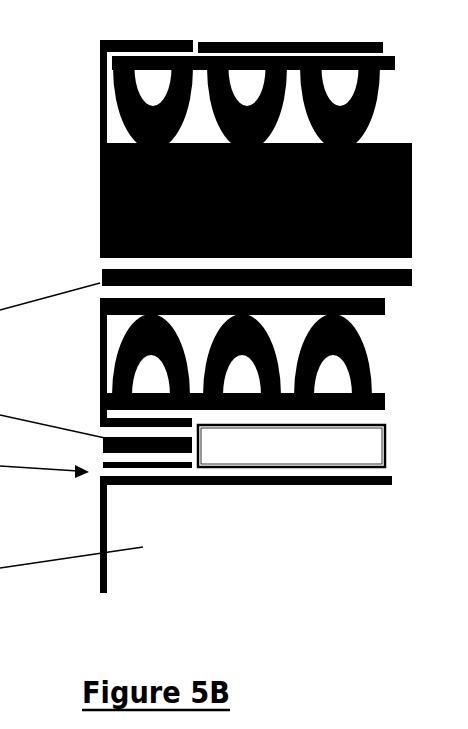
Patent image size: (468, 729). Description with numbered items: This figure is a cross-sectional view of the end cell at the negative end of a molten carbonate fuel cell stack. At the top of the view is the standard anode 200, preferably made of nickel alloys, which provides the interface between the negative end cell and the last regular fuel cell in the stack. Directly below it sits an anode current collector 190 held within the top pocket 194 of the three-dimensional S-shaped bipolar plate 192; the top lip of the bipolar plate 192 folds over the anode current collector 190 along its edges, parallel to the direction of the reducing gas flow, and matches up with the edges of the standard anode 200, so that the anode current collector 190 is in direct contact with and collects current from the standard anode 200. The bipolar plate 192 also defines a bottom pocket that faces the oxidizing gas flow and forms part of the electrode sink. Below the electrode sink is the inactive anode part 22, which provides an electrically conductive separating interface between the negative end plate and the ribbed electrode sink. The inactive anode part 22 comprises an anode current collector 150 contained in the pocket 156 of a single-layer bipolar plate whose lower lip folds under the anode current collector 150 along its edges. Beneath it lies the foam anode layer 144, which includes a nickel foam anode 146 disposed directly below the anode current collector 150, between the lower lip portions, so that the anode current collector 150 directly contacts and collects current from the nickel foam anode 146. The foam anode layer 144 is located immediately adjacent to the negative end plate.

The inactive anode part 22 is at (93, 317).
The foam anode layer 144 is at (390, 422).
The nickel foam anode 146 is at (228, 450).
The anode current collector 150 is at (114, 300).
The pocket 156 is at (100, 317).
The anode current collector 190 is at (117, 95).
The S-shaped bipolar plate 192 is at (100, 210).
The top pocket 194 is at (125, 127).
The standard anode 200 is at (237, 43).